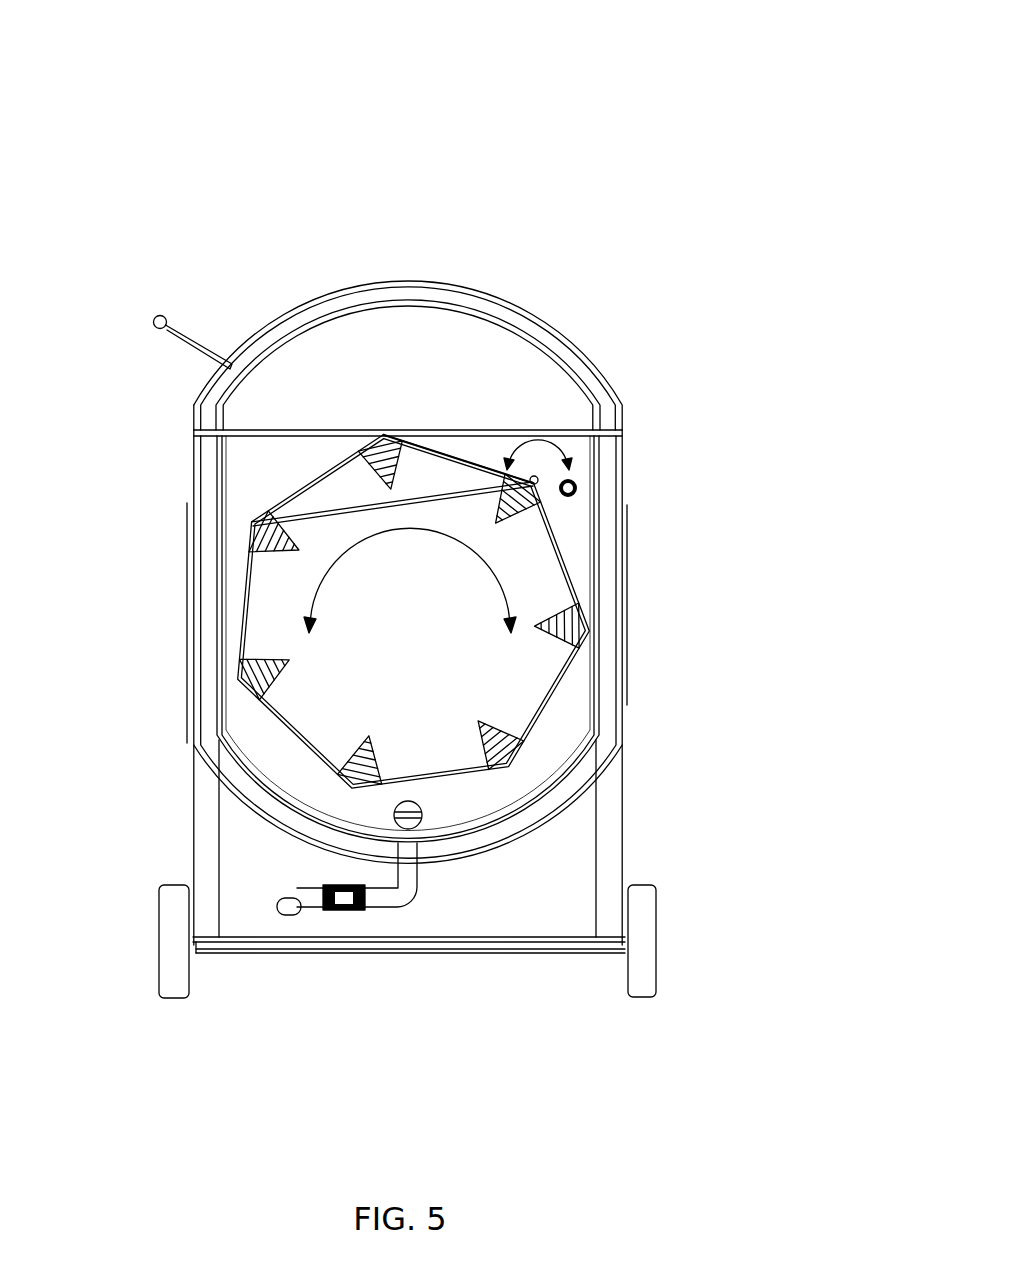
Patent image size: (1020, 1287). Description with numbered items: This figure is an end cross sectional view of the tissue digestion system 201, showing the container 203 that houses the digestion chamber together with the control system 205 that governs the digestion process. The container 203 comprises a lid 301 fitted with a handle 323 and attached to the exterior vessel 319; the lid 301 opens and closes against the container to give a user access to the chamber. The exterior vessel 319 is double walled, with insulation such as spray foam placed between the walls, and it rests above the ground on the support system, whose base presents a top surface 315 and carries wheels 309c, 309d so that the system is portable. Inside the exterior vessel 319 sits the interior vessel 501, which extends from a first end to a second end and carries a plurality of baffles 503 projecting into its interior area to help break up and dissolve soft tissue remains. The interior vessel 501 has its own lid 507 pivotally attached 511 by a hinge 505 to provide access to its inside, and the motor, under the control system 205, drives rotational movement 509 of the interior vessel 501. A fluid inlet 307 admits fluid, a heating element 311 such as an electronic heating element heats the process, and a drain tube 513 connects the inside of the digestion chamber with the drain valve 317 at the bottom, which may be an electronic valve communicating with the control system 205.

The tissue digestion system 201 is at (741, 94).
The container 203 is at (628, 254).
The control system 205 is at (128, 566).
The lid 301 is at (410, 282).
The fluid inlet 307 is at (577, 488).
The wheel 309c is at (176, 1000).
The wheel 309d is at (648, 1000).
The heating element 311 is at (422, 816).
The top surface 315 is at (563, 958).
The drain 317 is at (300, 920).
The exterior vessel 319 is at (189, 485).
The handle 323 is at (164, 316).
The interior vessel 501 is at (563, 703).
The baffle 503 is at (556, 606).
The hinge 505 is at (538, 441).
The lid 507 is at (430, 449).
The rotational movement 509 is at (412, 520).
The pivotal attachment 511 is at (538, 476).
The drain tube 513 is at (397, 910).